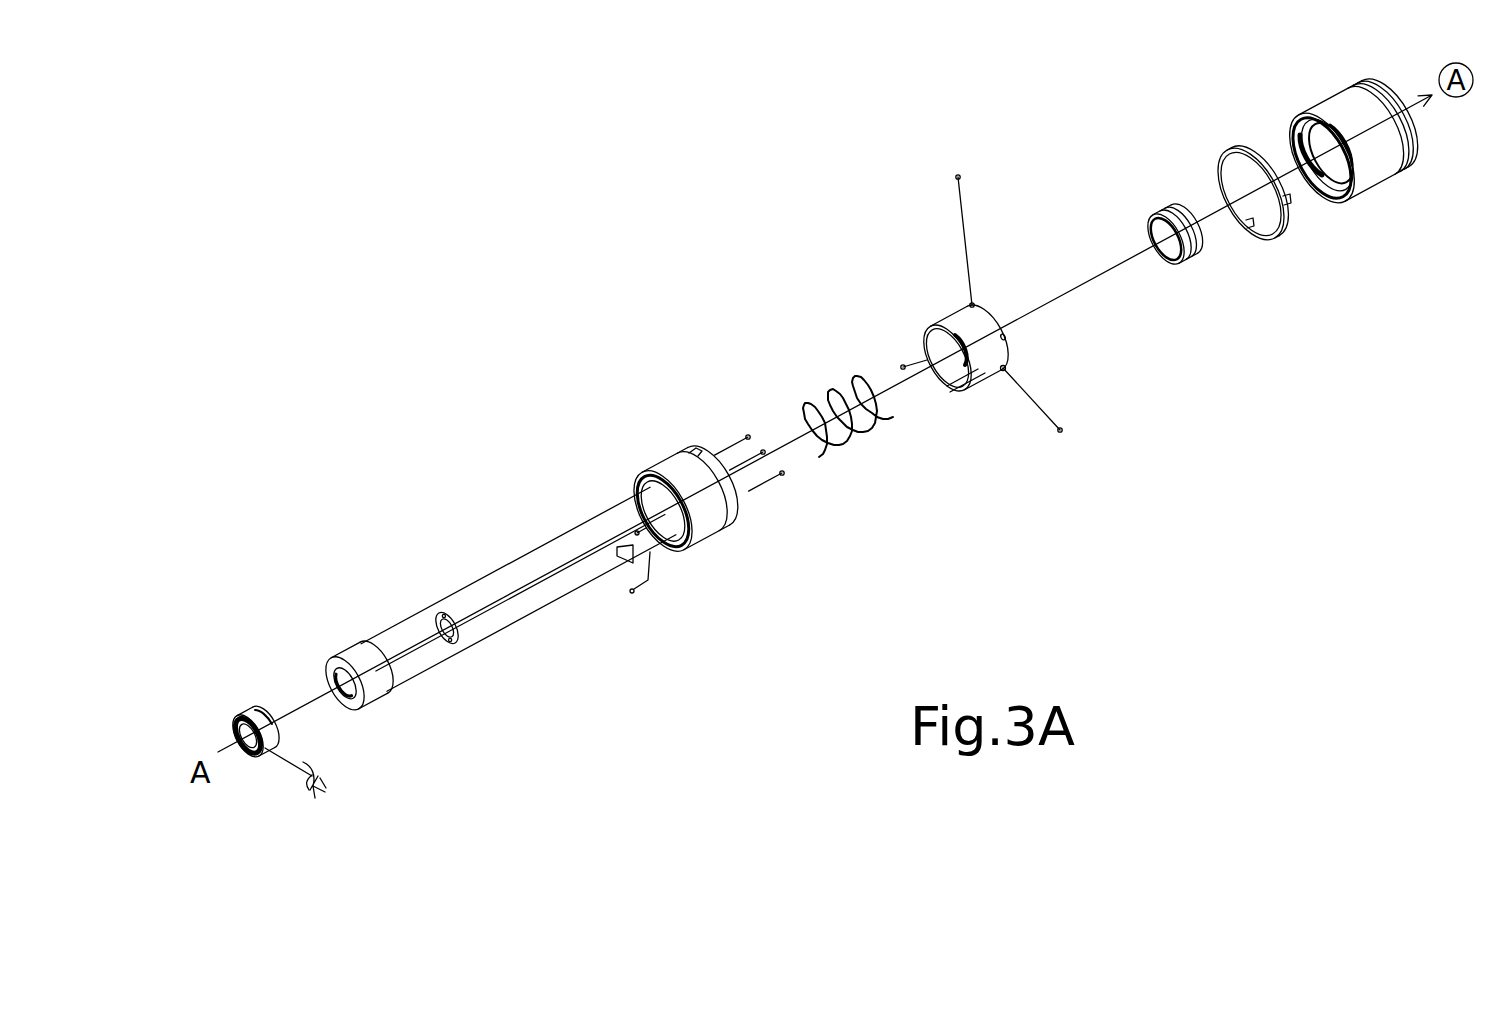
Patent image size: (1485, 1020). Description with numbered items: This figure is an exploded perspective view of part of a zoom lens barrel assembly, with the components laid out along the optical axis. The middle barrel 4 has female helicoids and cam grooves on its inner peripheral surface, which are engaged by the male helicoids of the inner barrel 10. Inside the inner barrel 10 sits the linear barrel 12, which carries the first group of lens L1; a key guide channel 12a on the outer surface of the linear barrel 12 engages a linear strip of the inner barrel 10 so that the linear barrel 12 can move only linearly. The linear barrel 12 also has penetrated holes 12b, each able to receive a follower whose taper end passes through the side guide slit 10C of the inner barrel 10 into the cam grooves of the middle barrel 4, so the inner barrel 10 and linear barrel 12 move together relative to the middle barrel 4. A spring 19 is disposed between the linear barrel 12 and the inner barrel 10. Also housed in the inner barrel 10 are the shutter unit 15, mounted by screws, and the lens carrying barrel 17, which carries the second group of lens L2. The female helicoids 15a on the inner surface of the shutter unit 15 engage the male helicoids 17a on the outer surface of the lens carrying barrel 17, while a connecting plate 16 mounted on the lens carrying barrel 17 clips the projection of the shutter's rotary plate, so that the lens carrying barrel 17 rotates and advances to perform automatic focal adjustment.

The middle barrel 4 is at (1372, 200).
The first group of lens L1 is at (1196, 258).
The linear barrel 12 is at (999, 303).
The key guide channel 12a is at (1006, 336).
The penetrated holes 12b is at (1008, 367).
The spring 19 is at (830, 382).
The inner barrel 10 is at (572, 549).
The side guide slit 10C is at (697, 450).
The shutter unit 15 is at (363, 706).
The female helicoids 15a is at (355, 692).
The lens carrying barrel 17 is at (258, 758).
The male helicoids 17a is at (261, 712).
The second group of lens L2 is at (252, 713).
The connecting plate 16 is at (335, 780).